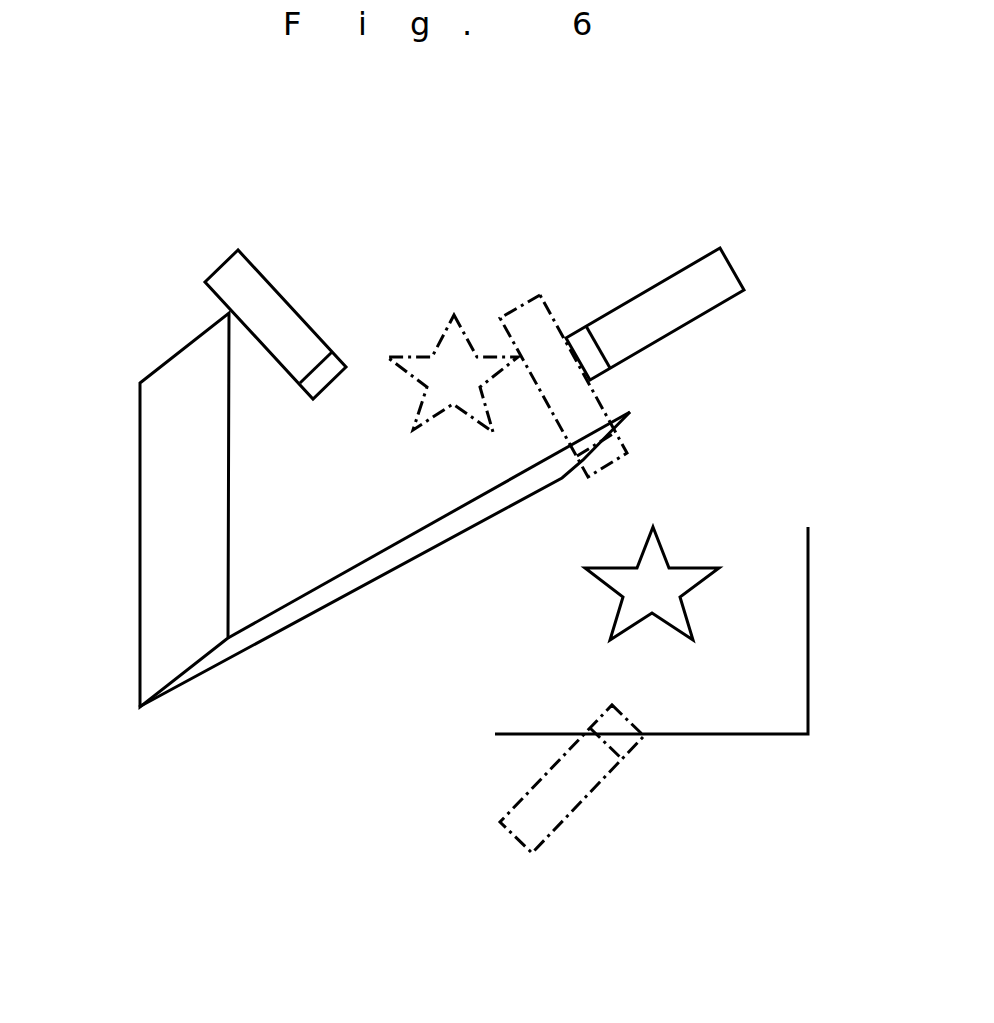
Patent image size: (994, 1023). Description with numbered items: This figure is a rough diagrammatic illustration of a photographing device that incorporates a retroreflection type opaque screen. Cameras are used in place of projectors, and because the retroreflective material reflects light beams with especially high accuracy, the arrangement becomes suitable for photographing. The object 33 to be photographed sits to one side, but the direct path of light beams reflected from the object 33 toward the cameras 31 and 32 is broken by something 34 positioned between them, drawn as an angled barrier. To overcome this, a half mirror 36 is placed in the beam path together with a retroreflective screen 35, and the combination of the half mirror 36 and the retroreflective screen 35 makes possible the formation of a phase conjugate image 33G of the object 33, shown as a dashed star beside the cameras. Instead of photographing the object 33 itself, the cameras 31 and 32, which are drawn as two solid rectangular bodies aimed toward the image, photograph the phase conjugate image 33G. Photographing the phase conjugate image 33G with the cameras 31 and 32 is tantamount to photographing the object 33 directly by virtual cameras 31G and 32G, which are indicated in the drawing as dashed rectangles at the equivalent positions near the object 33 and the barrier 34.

The camera 31 is at (258, 292).
The virtual camera 31G is at (550, 823).
The camera 32 is at (670, 293).
The virtual camera 32G is at (532, 300).
The object 33 is at (655, 558).
The phase conjugate image 33G is at (420, 400).
The something positioned therebetween 34 is at (808, 665).
The retroreflective screen 35 is at (145, 533).
The half mirror 36 is at (312, 607).